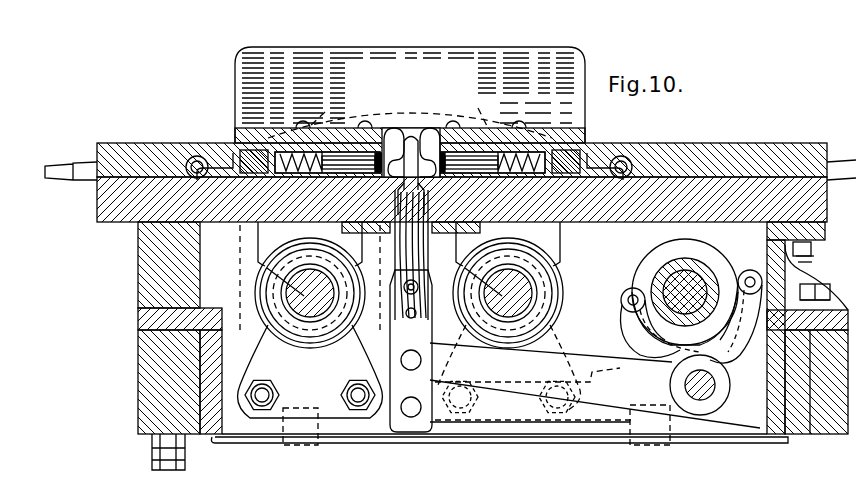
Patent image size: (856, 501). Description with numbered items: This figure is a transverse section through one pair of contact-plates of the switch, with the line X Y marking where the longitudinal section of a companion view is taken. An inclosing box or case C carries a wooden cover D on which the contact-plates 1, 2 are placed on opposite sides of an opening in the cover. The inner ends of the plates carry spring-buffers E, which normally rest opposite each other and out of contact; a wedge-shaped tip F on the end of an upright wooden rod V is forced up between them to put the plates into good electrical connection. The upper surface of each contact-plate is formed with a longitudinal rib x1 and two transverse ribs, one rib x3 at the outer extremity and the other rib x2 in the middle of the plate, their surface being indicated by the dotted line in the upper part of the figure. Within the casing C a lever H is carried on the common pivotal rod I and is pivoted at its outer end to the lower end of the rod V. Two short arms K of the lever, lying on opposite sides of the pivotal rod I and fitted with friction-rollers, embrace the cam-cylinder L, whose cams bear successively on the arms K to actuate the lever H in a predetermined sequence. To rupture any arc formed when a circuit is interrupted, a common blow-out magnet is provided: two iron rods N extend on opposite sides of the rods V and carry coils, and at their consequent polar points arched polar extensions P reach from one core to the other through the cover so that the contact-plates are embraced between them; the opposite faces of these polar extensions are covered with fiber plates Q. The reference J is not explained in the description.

The fiber plates Q is at (410, 95).
The spring-buffers E is at (411, 163).
The contact-plate 1 is at (356, 125).
The contact-plate 2 is at (468, 125).
The longitudinal rib x1 is at (410, 112).
The transverse rib x2 is at (418, 108).
The transverse rib x3 is at (412, 106).
The arched polar extensions P is at (260, 238).
The left bearing J is at (355, 245).
The wedge-shaped tip F is at (515, 233).
The upright wooden rod V is at (417, 351).
The iron rods N is at (268, 330).
The lever H is at (565, 365).
The pivotal rod I is at (700, 415).
The cam-cylinder L is at (704, 275).
The short arms K is at (625, 290).
The wooden cover D is at (822, 197).
The inclosing box or case C is at (826, 231).
The section line X is at (392, 300).
The section line Y is at (392, 300).